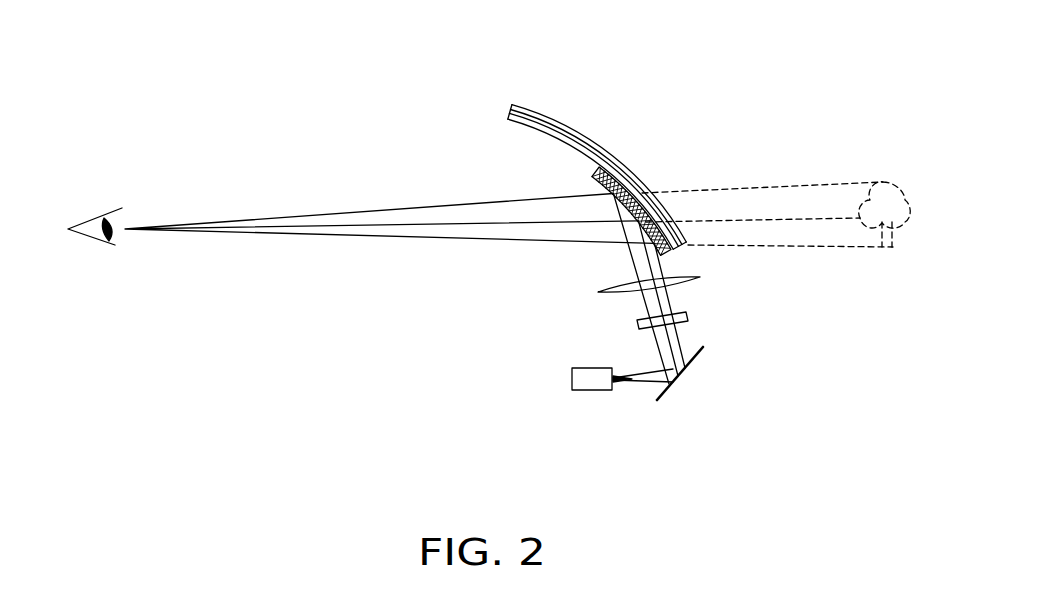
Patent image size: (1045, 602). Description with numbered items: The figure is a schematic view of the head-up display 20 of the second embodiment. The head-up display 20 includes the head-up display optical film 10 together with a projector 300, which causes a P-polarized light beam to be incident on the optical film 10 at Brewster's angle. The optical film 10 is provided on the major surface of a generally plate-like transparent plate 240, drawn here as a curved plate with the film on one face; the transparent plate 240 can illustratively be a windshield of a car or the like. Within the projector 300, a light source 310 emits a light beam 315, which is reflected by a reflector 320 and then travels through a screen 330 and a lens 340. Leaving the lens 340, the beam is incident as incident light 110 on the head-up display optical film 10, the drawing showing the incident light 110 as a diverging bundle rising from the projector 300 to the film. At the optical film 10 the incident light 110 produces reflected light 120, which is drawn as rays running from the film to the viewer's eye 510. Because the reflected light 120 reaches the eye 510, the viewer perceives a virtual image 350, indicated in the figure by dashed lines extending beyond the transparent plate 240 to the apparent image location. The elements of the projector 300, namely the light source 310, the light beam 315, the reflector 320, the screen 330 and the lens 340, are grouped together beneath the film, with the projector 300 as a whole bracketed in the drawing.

The head-up display 20 is at (432, 103).
The transparent plate 240 is at (573, 128).
The head-up display optical film 10 is at (595, 177).
The viewer's eye 510 is at (96, 222).
The reflected light 120 is at (403, 207).
The virtual image 350 is at (880, 180).
The incident light 110 is at (645, 259).
The projector 300 is at (876, 466).
The light source 310 is at (588, 391).
The light beam 315 is at (657, 383).
The reflector 320 is at (695, 355).
The screen 330 is at (688, 326).
The lens 340 is at (692, 284).